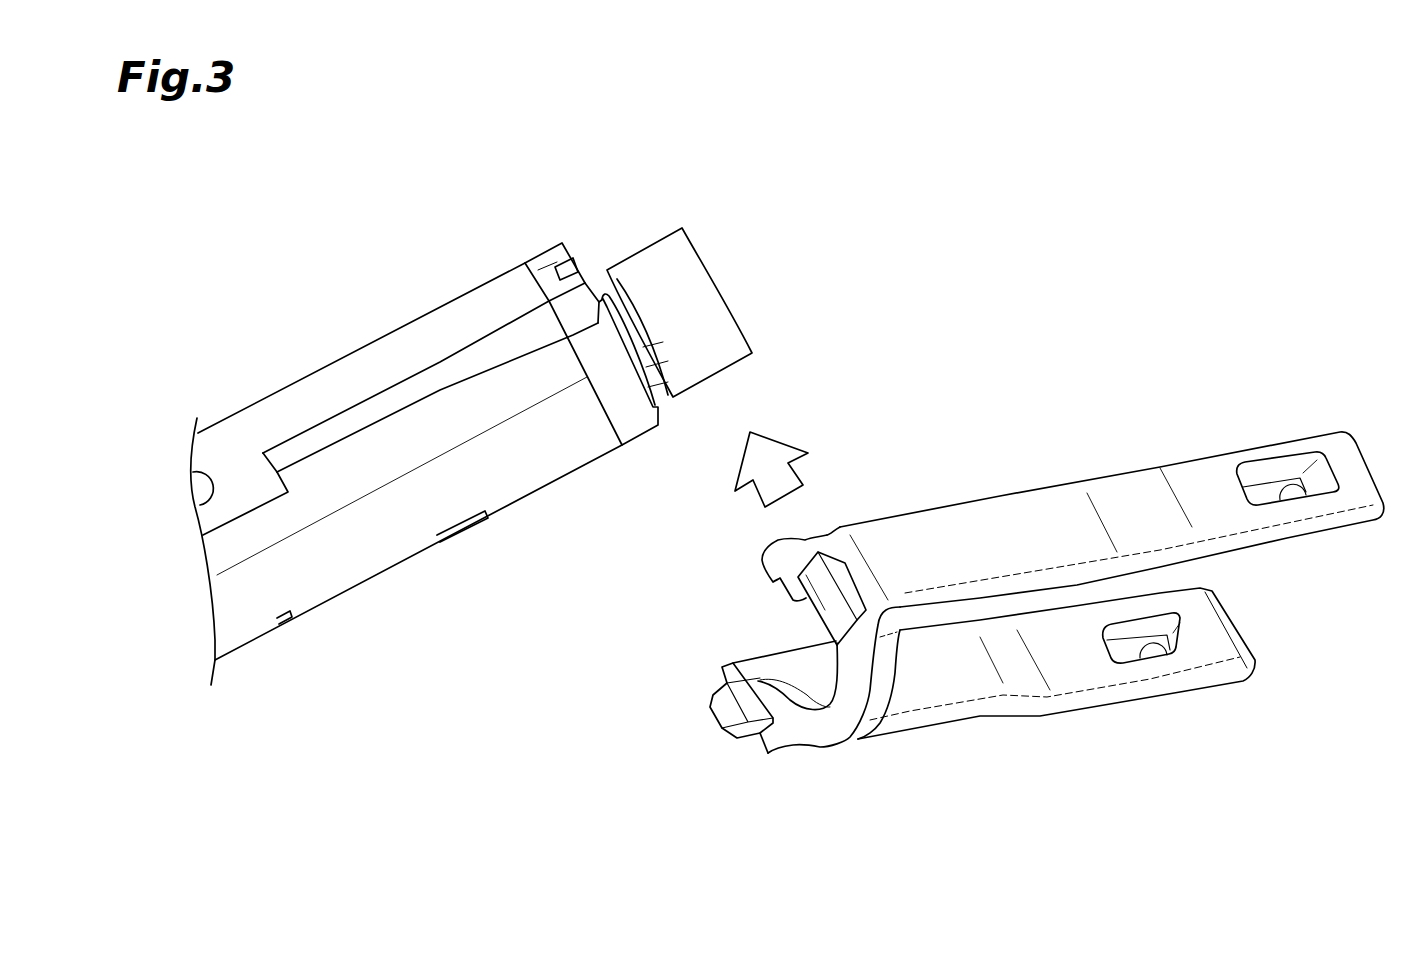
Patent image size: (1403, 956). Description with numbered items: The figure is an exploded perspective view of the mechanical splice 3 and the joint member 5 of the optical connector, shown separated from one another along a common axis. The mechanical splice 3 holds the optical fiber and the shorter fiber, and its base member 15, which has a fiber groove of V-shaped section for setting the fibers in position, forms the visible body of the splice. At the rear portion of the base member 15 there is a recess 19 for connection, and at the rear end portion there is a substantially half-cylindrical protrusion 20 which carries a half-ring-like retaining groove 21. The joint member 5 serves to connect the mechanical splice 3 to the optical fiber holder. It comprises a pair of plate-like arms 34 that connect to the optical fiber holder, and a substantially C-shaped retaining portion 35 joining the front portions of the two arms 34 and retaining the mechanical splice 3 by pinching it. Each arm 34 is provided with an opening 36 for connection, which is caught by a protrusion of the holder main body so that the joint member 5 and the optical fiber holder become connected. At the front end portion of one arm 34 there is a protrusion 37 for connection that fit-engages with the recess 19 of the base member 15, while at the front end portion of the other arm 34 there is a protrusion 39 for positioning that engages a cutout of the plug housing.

The mechanical splice 3 is at (503, 430).
The base member 15 is at (410, 340).
The recess for connection 19 is at (568, 298).
The protrusion 20 is at (715, 299).
The retaining groove 21 is at (643, 347).
The joint member 5 is at (1009, 579).
The arms 34 is at (1027, 508).
The retaining portion 35 is at (824, 742).
The opening for connection 36 is at (1307, 495).
The protrusion for connection 37 is at (810, 600).
The protrusion for positioning 39 is at (717, 712).